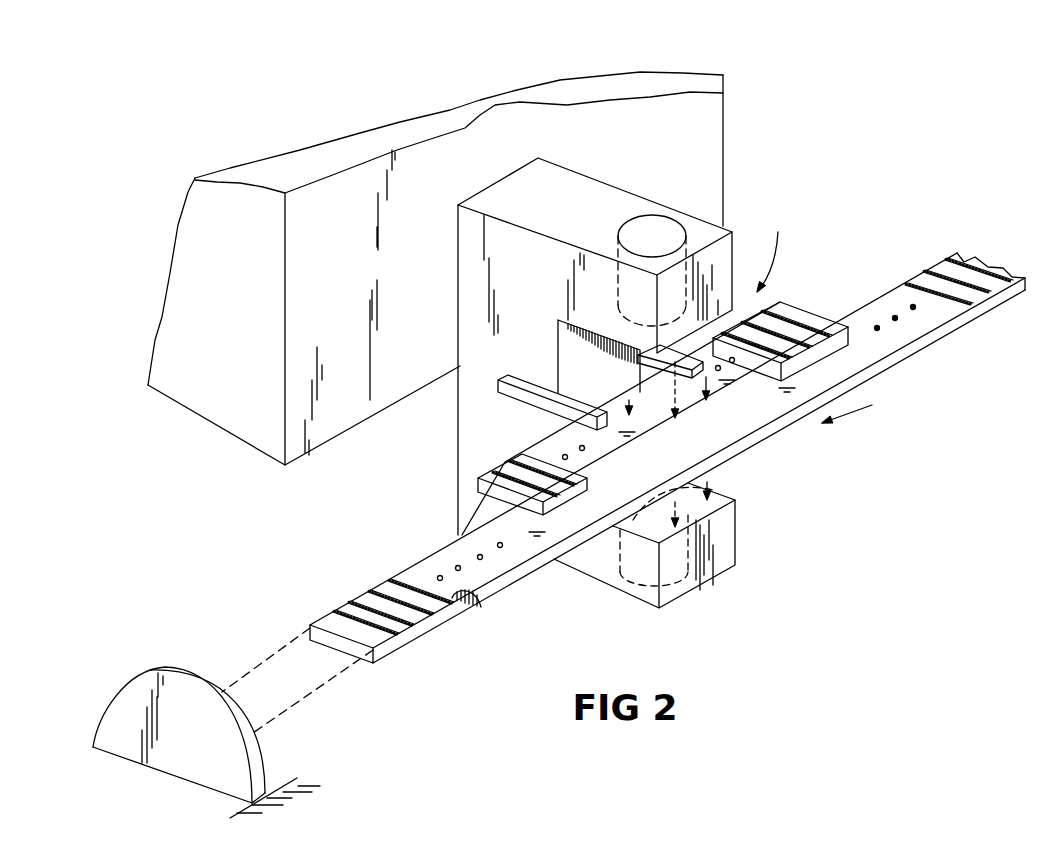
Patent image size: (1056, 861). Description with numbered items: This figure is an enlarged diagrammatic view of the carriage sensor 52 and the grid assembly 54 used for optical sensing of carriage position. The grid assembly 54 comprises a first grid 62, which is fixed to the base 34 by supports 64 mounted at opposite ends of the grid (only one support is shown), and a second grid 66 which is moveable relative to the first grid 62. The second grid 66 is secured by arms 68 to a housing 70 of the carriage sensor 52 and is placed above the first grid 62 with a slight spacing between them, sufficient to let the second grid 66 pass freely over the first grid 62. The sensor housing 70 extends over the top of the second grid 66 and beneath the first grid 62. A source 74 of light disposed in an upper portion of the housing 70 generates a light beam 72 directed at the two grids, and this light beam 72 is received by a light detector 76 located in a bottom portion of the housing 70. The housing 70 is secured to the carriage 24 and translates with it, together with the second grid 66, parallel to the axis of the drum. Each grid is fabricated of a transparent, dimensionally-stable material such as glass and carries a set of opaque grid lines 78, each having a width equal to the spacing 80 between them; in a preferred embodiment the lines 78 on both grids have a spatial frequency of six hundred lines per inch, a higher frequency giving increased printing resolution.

The carriage 24 is at (727, 157).
The housing 70 is at (592, 178).
The source of light 74 is at (627, 223).
The carriage sensor 52 is at (774, 250).
The second grid 66 is at (803, 307).
The first grid 62 is at (915, 355).
The grid assembly 54 is at (859, 407).
The arms 68 is at (542, 390).
The spacing 80 is at (493, 470).
The opaque grid lines 78 is at (480, 476).
The light beam 72 is at (677, 400).
The light detector 76 is at (712, 488).
The supports 64 is at (150, 667).
The base 34 is at (297, 792).